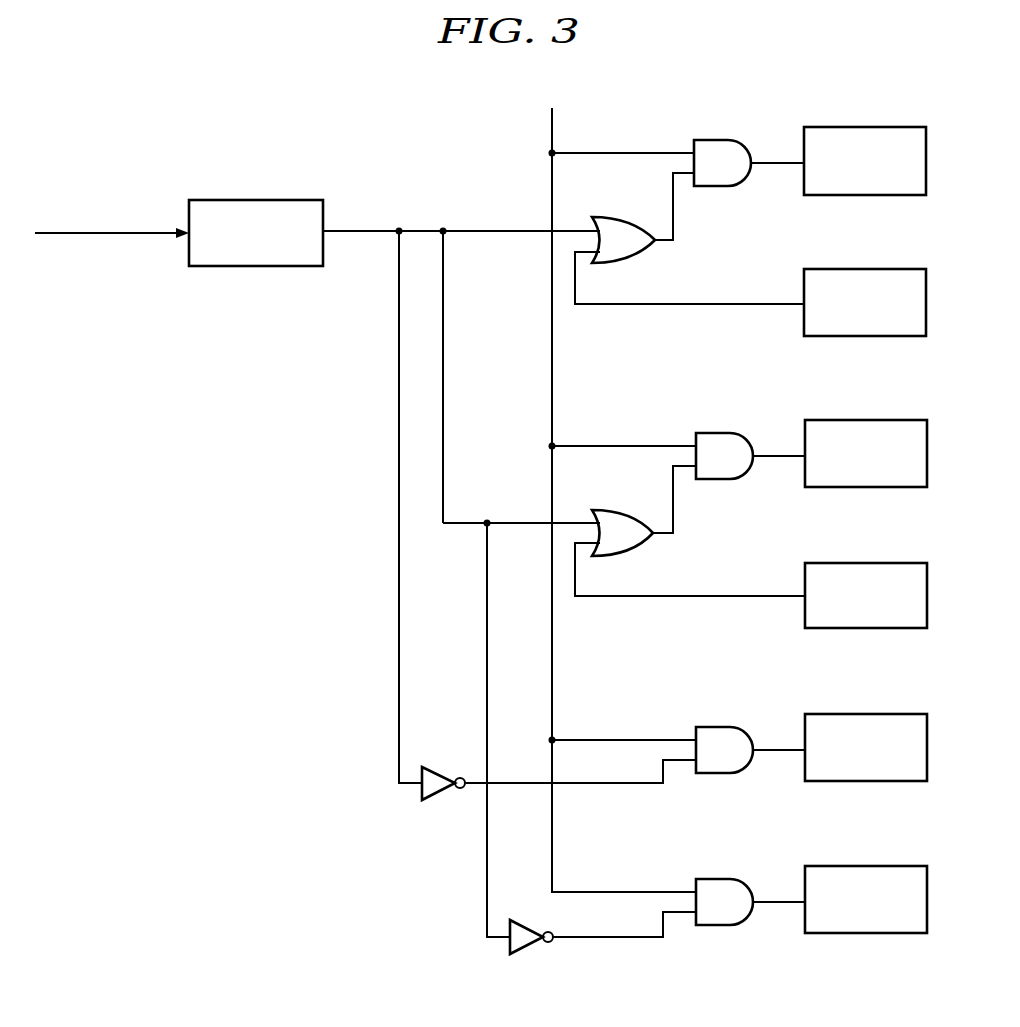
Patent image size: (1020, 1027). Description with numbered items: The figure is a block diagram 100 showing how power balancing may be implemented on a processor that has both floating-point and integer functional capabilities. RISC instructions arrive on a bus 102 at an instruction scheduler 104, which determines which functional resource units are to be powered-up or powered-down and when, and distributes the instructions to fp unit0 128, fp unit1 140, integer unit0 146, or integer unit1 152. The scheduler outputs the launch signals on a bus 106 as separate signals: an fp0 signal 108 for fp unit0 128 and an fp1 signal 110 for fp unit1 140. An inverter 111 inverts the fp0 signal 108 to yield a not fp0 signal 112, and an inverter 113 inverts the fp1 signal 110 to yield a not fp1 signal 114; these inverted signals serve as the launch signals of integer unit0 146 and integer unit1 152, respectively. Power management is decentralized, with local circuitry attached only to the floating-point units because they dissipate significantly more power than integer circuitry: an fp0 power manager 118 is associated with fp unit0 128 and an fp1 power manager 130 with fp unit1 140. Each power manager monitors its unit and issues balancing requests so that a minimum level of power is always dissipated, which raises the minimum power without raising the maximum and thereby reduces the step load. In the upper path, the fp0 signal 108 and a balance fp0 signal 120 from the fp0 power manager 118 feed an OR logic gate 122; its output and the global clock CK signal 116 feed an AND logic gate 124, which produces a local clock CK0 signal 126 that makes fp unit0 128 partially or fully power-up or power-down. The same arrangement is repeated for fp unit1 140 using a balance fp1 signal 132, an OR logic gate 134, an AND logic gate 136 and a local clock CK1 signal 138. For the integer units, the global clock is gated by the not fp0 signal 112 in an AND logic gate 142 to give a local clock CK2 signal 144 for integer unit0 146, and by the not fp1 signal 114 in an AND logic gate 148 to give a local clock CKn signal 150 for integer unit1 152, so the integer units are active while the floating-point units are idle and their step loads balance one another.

The block diagram 100 is at (362, 111).
The bus 102 is at (107, 240).
The instruction scheduler 104 is at (257, 199).
The bus 106 is at (493, 233).
The fp0 signal 108 is at (399, 228).
The fp1 signal 110 is at (515, 525).
The inverter 111 is at (440, 797).
The not fp0 signal 112 is at (603, 787).
The inverter 113 is at (525, 950).
The not fp1 signal 114 is at (615, 940).
The global clock CK signal 116 is at (551, 131).
The fp0 power manager 118 is at (864, 268).
The balance fp0 signal 120 is at (713, 305).
The OR logic gate 122 is at (623, 216).
The AND logic gate 124 is at (722, 139).
The local clock CK0 signal 126 is at (773, 165).
The fp unit0 128 is at (864, 126).
The fp1 power manager 130 is at (864, 562).
The balance fp1 signal 132 is at (713, 600).
The OR logic gate 134 is at (625, 508).
The AND logic gate 136 is at (722, 432).
The local clock CK1 signal 138 is at (777, 457).
The fp unit1 140 is at (864, 419).
The AND logic gate 142 is at (723, 726).
The local clock CK2 signal 144 is at (777, 752).
The integer unit0 146 is at (867, 713).
The AND logic gate 148 is at (723, 878).
The local clock CKn signal 150 is at (777, 905).
The integer unit1 152 is at (867, 934).